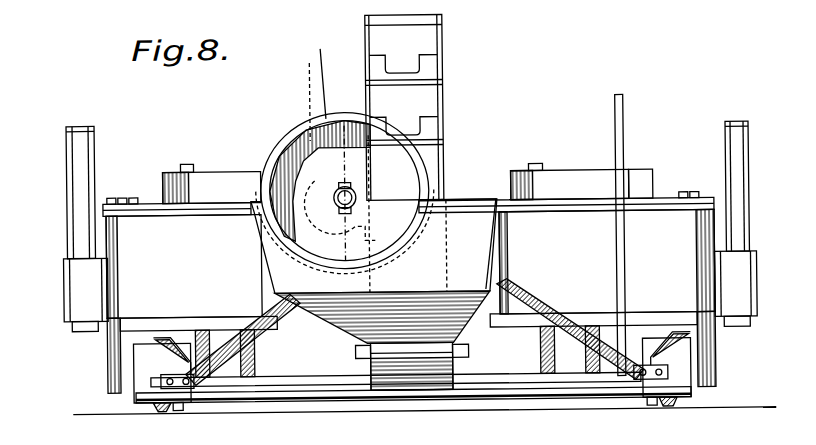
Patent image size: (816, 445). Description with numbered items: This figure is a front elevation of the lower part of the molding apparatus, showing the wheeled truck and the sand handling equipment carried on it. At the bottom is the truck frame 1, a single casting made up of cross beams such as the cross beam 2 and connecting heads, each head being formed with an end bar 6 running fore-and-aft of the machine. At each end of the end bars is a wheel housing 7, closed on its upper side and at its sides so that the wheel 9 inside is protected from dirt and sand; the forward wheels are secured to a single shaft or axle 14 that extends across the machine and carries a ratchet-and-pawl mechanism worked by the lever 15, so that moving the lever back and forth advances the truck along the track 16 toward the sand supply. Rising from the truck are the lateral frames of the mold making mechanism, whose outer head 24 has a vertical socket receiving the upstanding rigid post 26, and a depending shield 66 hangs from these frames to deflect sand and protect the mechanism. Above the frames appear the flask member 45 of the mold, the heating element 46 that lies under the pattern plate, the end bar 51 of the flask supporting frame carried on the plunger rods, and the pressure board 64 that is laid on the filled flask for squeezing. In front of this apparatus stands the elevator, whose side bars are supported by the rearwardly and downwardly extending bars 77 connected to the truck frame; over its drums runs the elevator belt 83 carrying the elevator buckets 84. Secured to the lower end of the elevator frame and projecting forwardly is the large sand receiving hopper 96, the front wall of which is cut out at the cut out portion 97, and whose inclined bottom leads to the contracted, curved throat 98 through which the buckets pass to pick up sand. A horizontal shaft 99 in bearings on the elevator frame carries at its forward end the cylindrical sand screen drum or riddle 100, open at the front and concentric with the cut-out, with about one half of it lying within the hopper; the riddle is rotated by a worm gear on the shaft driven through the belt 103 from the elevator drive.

The truck frame 1 is at (497, 386).
The cross beam 2 is at (330, 402).
The end bar 6 is at (148, 350).
The wheel housing 7 is at (148, 372).
The wheel 9 is at (178, 409).
The shaft or axle 14 is at (548, 381).
The lever 15 is at (617, 257).
The track 16 is at (160, 410).
The outer head 24 is at (65, 276).
The post 26 is at (70, 170).
The flask member 45 is at (640, 172).
The heating element 46 is at (172, 174).
The end bar of flask supporting frame 51 is at (146, 197).
The pressure board 64 is at (222, 172).
The depending shield 66 is at (409, 257).
The rearwardly and downwardly extending bar 77 is at (236, 348).
The elevator belt 83 is at (432, 103).
The elevator bucket 84 is at (440, 78).
The sand receiving hopper 96 is at (478, 200).
The cut out portion 97 is at (425, 240).
The throat 98 is at (410, 392).
The horizontal shaft 99 is at (283, 158).
The sand screen drum or riddle 100 is at (302, 133).
The belt 103 is at (312, 62).